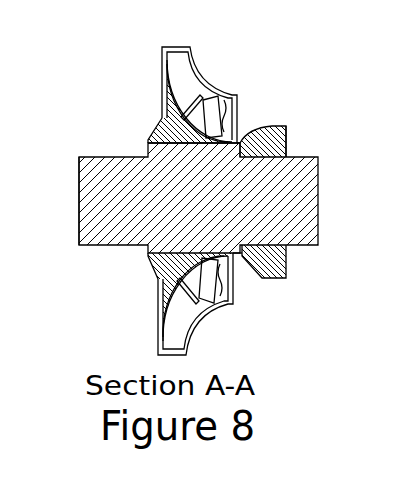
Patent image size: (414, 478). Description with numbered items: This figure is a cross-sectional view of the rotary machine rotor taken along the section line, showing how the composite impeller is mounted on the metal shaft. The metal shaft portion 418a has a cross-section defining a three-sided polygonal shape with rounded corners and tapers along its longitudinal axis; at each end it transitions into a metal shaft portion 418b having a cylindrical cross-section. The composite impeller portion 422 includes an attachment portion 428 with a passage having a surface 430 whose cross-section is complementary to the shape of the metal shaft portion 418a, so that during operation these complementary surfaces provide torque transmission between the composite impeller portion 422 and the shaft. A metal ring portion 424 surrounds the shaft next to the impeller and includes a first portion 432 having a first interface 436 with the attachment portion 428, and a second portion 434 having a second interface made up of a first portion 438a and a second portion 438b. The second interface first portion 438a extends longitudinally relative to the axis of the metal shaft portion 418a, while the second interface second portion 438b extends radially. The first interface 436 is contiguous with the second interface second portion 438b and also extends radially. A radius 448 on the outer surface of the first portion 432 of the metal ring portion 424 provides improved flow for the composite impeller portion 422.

The metal shaft portion 418a is at (160, 126).
The metal shaft portion 418b is at (79, 157).
The composite impeller portion 422 is at (192, 62).
The metal ring portion 424 is at (273, 126).
The attachment portion 428 is at (155, 268).
The surface 430 is at (185, 250).
The first portion 432 is at (246, 134).
The second portion 434 is at (288, 145).
The first interface 436 is at (244, 258).
The first portion of second interface 438a is at (250, 147).
The second portion of second interface 438b is at (237, 143).
The radius 448 is at (266, 279).